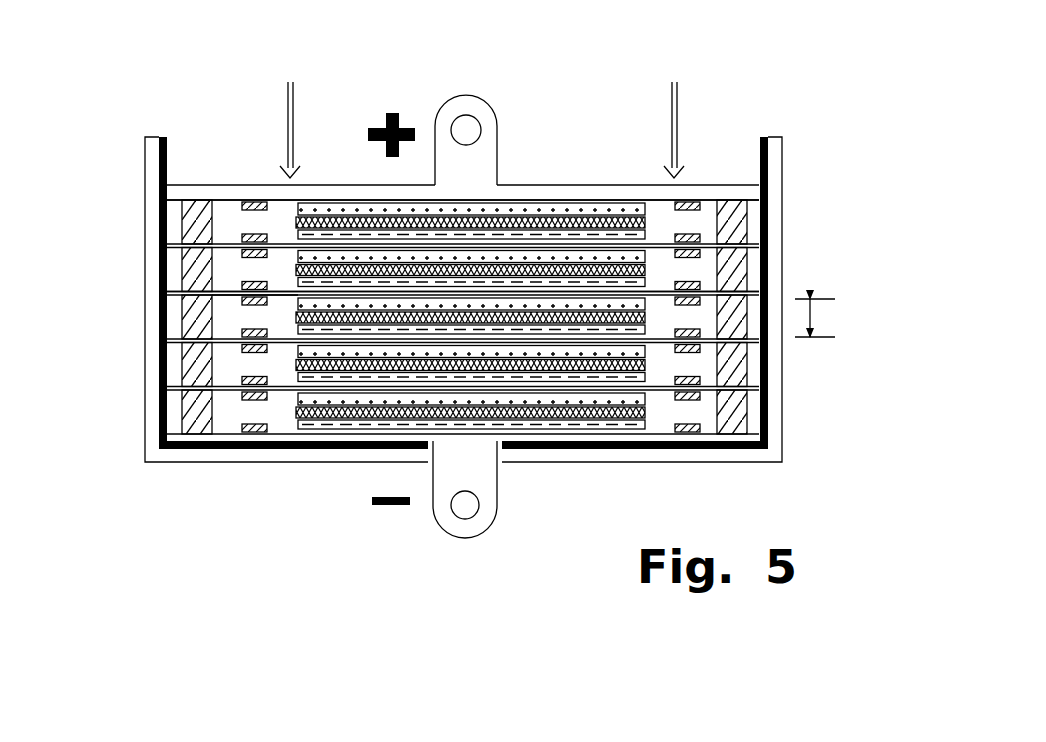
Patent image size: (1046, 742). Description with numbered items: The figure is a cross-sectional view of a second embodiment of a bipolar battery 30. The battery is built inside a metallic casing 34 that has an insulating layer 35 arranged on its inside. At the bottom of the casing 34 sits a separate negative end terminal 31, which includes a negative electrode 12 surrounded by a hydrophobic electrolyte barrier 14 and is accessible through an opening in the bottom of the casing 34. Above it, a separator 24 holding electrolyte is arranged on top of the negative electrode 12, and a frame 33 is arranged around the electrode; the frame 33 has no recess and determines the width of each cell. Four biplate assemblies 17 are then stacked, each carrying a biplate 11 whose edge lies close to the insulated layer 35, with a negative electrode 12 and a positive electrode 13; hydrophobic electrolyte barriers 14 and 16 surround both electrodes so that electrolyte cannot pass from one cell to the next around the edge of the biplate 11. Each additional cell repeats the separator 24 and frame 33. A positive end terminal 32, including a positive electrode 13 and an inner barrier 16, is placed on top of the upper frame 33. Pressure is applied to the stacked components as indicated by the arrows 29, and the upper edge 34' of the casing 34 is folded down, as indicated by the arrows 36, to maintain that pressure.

The biplate 11 is at (162, 292).
The negative electrode 12 is at (557, 425).
The positive electrode 13 is at (592, 213).
The hydrophobic electrolyte barrier 14 is at (240, 428).
The hydrophobic electrolyte barrier 16 is at (205, 425).
The biplate assembly 17 is at (216, 302).
The separator 24 is at (528, 213).
The arrows indicating applied pressure 29 is at (292, 122).
The bipolar battery 30 is at (134, 109).
The negative end terminal 31 is at (441, 533).
The positive end terminal 32 is at (434, 105).
The frame 33 is at (185, 212).
The casing 34 is at (449, 293).
The upper edge of the casing 34' is at (459, 299).
The insulating layer 35 is at (158, 193).
The arrows indicating folding 36 is at (191, 154).